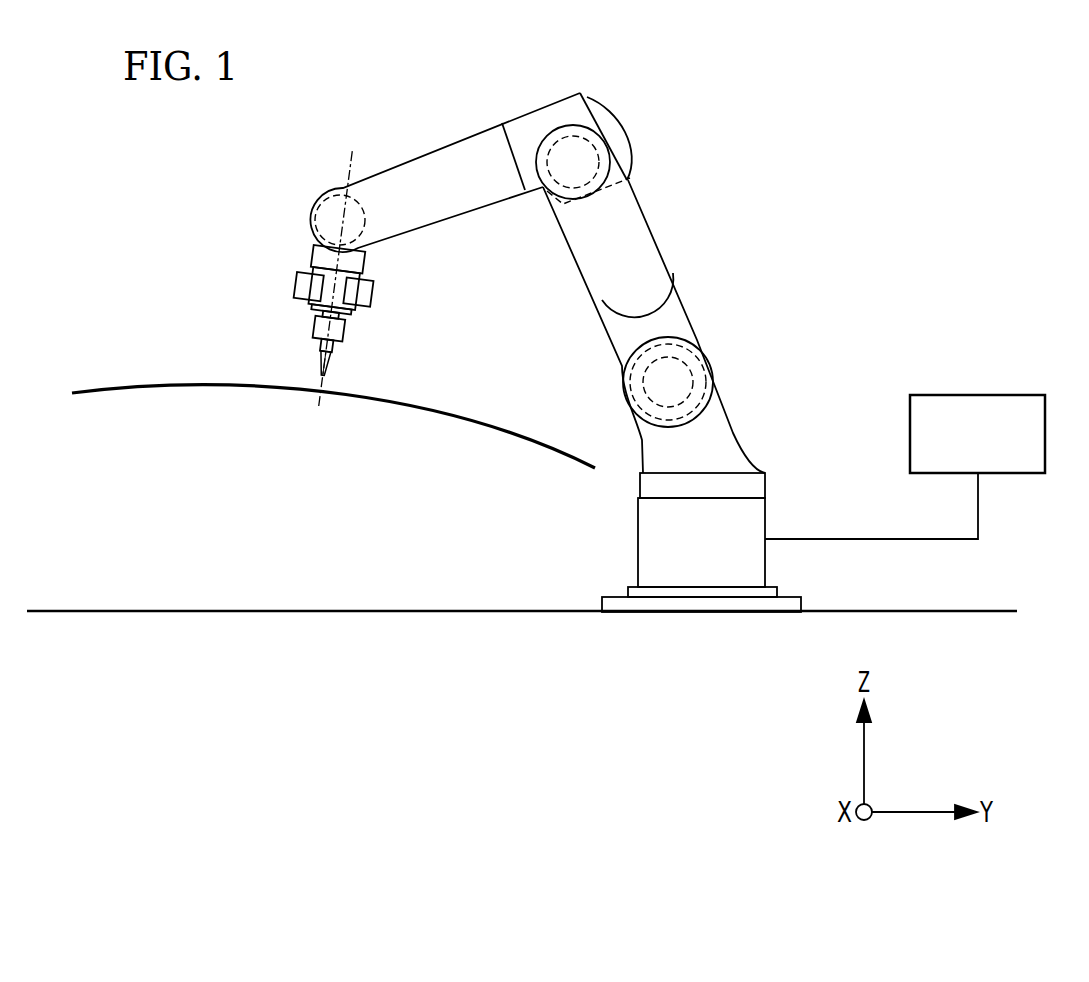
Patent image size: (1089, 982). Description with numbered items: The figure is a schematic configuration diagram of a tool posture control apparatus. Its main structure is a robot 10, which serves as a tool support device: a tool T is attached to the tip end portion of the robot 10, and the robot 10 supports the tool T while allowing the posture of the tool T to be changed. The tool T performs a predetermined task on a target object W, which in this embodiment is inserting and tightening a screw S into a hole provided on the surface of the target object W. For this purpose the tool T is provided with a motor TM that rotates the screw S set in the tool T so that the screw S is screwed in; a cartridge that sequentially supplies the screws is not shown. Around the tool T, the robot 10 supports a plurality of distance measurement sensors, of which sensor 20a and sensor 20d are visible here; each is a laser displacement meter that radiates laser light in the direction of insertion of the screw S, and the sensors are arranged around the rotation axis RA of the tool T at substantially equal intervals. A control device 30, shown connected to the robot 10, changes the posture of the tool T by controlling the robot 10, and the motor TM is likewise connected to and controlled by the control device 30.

The robot 10 is at (651, 224).
The rotation axis RA is at (313, 208).
The tool T is at (362, 276).
The sensor 20a is at (293, 278).
The sensor 20d is at (373, 292).
The motor TM is at (343, 315).
The screw S is at (330, 363).
The target object W is at (130, 387).
The control device 30 is at (975, 395).